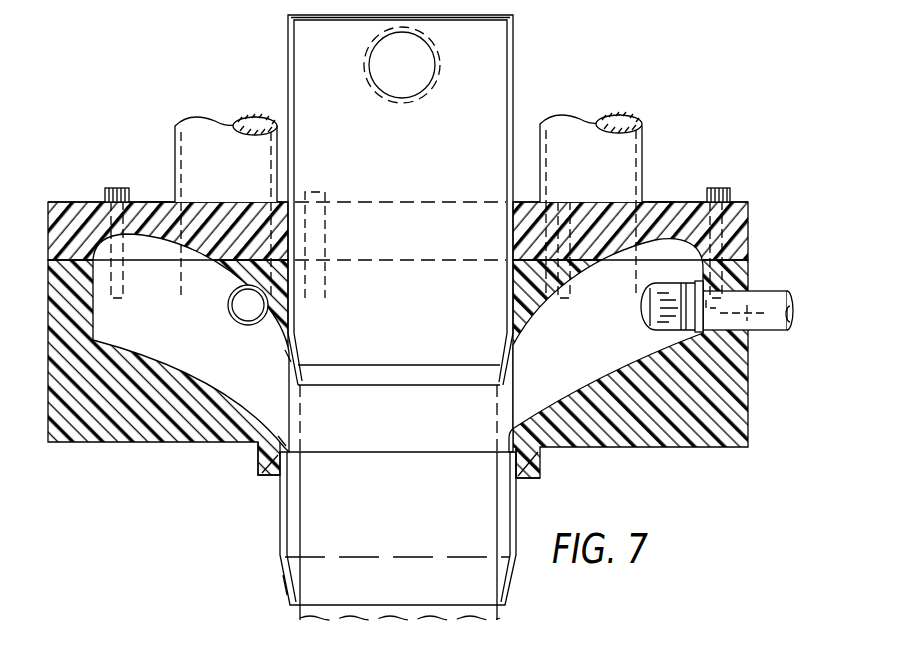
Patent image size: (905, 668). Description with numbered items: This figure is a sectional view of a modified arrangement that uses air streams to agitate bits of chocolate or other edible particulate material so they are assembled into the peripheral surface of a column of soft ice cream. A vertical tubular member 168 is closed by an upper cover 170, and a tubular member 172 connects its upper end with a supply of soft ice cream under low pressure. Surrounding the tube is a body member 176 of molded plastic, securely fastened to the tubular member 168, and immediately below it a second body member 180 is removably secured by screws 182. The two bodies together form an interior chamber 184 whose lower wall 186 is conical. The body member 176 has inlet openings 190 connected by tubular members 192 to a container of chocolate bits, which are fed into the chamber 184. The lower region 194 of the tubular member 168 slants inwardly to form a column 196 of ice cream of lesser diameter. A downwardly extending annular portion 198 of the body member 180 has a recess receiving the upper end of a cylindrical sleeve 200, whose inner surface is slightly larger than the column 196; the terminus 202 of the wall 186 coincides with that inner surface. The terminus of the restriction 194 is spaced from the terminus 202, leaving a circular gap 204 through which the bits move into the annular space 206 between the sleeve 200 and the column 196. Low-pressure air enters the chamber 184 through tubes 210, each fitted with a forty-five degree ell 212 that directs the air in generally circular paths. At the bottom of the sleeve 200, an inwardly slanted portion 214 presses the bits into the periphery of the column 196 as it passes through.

The tubular member 168 is at (515, 64).
The upper cover 170 is at (508, 17).
The tubular member 172 is at (436, 92).
The body member 176 is at (92, 203).
The second body member 180 is at (50, 426).
The screws 182 is at (108, 188).
The interior chamber 184 is at (202, 346).
The lower wall 186 is at (582, 396).
The inlet openings 190 is at (165, 212).
The tubular members 192 is at (175, 136).
The lower region 194 is at (288, 360).
The column 196 is at (498, 400).
The annular portion 198 is at (258, 463).
The sleeve 200 is at (518, 506).
The terminus 202 is at (285, 428).
The circular gap 204 is at (496, 417).
The annular space 206 is at (292, 513).
The tubes 210 is at (793, 257).
The 45° ell 212 is at (232, 296).
The inwardly slanted portion 214 is at (286, 593).